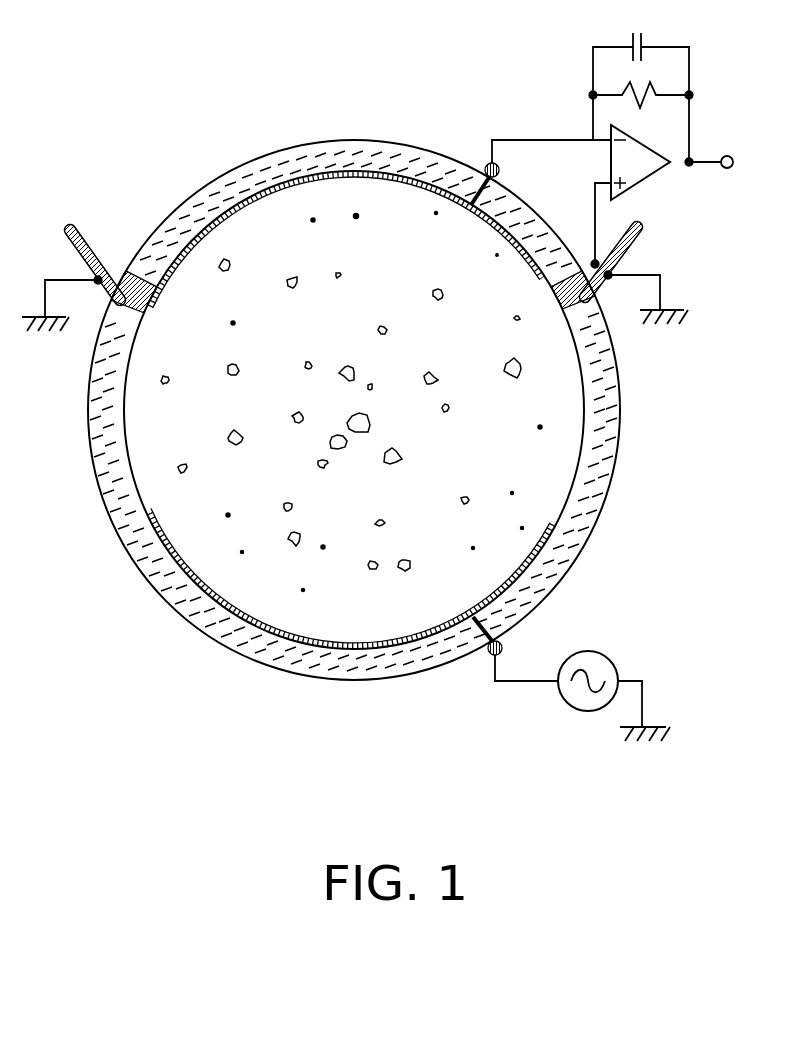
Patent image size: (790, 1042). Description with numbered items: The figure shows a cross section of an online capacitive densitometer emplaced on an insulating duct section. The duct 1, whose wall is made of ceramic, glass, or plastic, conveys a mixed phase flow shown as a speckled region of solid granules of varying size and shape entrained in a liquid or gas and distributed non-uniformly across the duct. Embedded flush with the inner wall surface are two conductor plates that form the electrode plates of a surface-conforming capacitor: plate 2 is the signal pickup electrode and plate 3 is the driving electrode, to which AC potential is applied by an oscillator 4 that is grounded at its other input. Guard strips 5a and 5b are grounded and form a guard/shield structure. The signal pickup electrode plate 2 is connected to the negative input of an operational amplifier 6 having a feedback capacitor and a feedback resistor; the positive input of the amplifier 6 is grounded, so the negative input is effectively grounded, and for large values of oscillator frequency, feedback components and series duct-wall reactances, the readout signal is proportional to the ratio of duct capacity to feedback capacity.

The duct 1 is at (605, 424).
The signal pickup electrode plate 2 is at (359, 172).
The driving electrode plate 3 is at (340, 647).
The oscillator 4 is at (592, 652).
The guard strip 5a is at (85, 240).
The guard strip 5b is at (624, 247).
The operational amplifier 6 is at (652, 175).